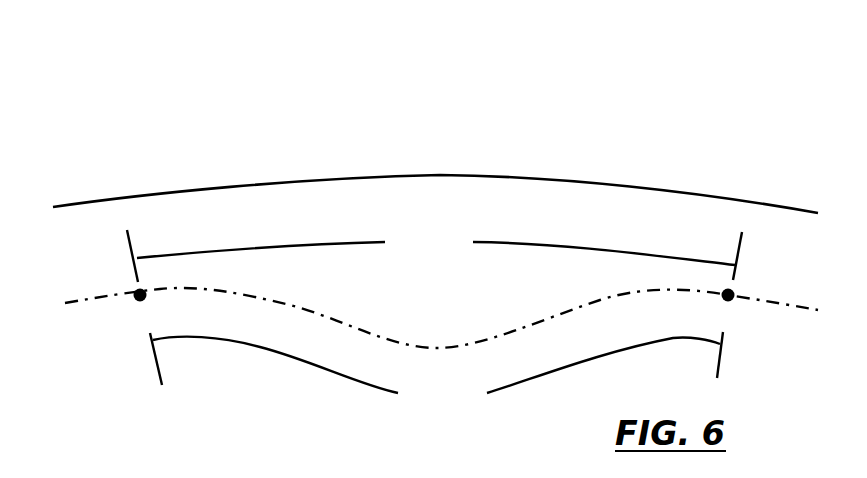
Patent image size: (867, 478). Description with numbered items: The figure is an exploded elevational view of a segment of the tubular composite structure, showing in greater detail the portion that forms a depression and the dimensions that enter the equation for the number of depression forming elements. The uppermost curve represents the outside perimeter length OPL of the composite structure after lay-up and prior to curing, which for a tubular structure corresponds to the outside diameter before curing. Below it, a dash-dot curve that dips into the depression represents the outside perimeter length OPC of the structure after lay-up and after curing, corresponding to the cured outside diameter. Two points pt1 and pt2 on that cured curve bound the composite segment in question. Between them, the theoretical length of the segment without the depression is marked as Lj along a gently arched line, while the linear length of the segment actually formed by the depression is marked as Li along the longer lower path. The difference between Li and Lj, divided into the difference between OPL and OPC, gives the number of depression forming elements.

The outside perimeter length after lay-up and prior to curing OPL is at (447, 172).
The outside perimeter length after lay-up and after curing OPC is at (82, 298).
The first end point of the composite segment pt1 is at (124, 309).
The second end point of the composite segment pt2 is at (756, 285).
The theoretical length of the composite segment without the depression Lj is at (434, 256).
The linear length of the composite segment formed by a depression Li is at (436, 372).